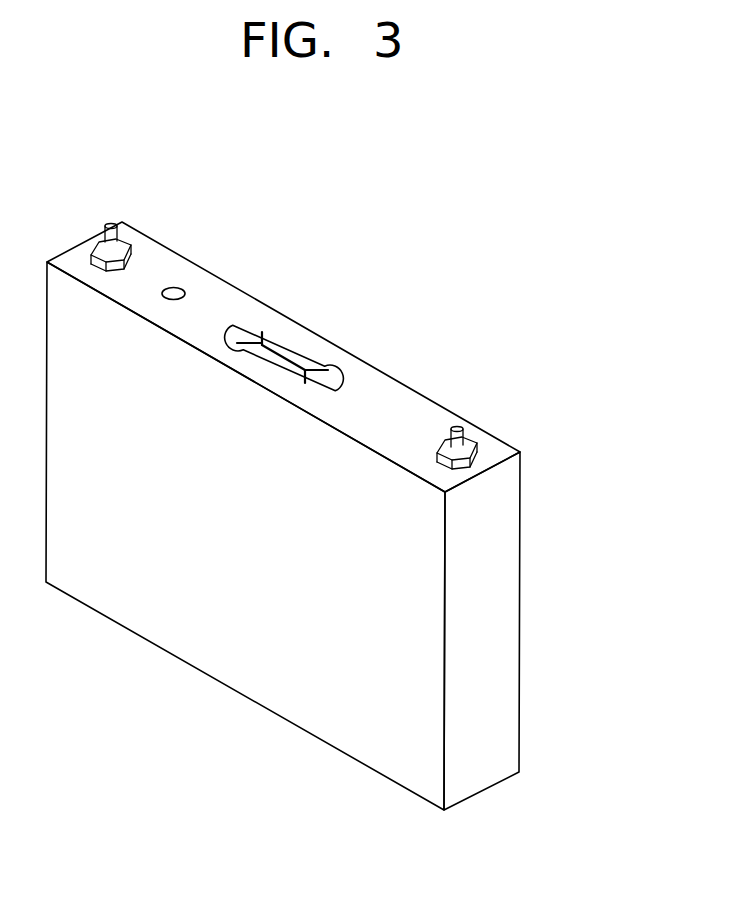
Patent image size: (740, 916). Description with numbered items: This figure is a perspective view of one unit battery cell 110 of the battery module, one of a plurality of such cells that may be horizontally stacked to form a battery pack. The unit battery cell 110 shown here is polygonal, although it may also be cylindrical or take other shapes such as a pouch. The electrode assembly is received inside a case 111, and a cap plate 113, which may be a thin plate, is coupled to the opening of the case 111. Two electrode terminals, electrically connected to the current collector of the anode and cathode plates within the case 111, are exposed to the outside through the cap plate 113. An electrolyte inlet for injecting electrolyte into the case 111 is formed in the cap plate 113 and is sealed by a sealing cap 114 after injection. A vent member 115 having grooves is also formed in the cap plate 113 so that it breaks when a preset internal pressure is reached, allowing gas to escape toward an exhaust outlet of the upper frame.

The unit battery cell 110 is at (534, 406).
The case 111 is at (237, 668).
The cap plate 113 is at (380, 393).
The sealing cap 114 is at (173, 288).
The vent member 115 is at (285, 357).